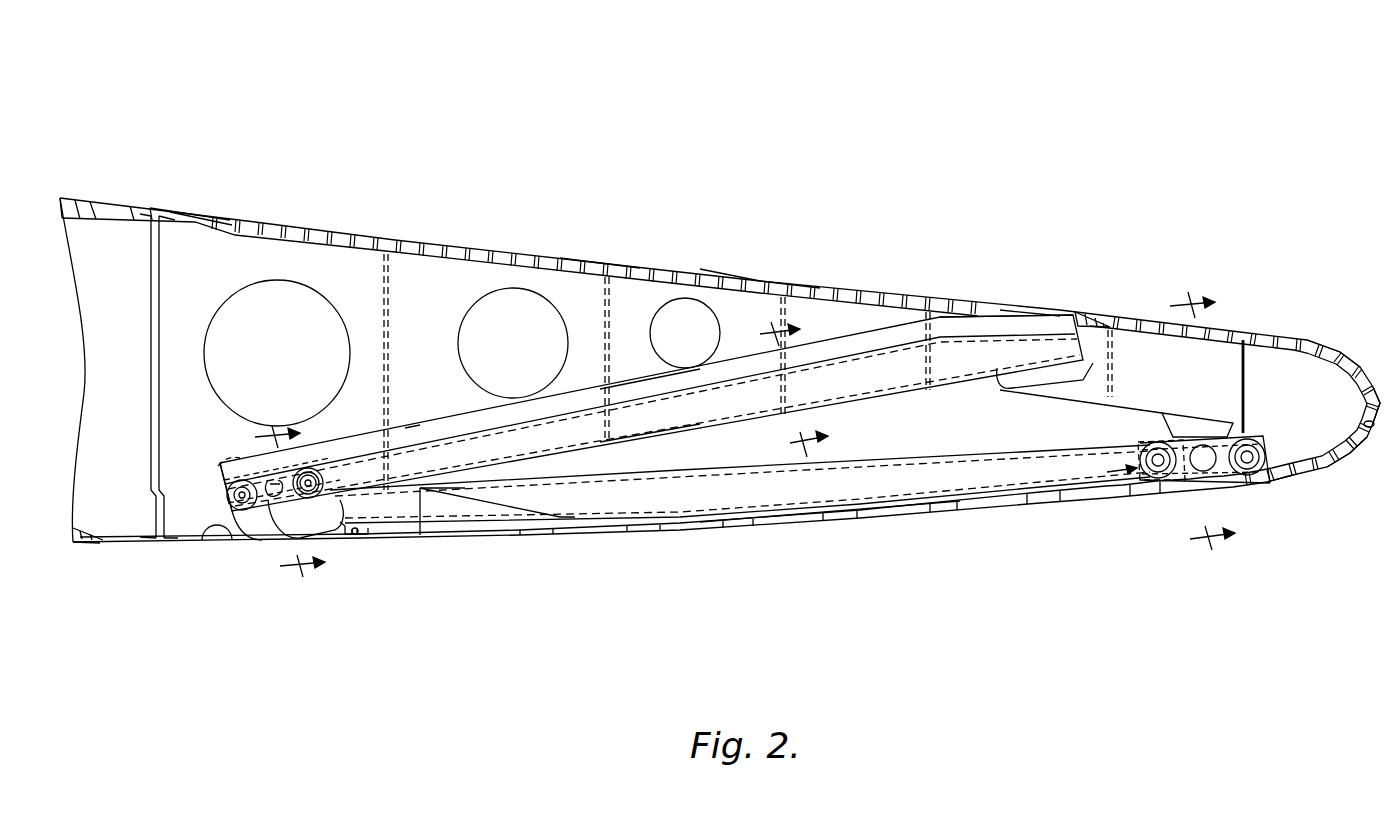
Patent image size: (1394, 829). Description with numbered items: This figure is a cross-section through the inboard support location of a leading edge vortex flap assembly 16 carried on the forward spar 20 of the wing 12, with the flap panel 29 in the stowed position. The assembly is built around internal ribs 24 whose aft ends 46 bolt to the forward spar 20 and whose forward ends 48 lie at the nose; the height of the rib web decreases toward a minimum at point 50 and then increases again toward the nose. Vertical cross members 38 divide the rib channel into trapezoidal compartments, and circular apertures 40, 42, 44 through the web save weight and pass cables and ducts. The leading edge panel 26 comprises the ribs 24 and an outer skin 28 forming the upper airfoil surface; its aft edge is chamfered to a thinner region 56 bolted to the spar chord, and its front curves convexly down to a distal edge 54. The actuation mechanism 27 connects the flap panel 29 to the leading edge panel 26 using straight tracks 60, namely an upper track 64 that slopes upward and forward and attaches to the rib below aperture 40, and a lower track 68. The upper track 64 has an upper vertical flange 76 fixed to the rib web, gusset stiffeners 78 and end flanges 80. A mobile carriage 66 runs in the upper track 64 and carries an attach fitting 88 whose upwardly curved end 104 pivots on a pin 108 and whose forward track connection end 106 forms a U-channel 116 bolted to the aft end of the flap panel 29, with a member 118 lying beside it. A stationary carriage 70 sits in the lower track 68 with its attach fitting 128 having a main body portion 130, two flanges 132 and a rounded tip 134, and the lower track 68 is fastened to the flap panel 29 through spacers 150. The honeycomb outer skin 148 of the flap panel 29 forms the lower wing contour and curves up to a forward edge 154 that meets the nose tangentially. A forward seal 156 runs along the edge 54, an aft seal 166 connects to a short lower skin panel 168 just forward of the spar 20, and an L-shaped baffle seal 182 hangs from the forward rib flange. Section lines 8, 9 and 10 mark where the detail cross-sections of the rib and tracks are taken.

The vortex flap assembly 16 is at (834, 86).
The wing 12 is at (90, 548).
The forward spar 20 is at (152, 410).
The ribs 24 is at (418, 278).
The leading edge panel 26 is at (722, 272).
The outer skin 28 is at (582, 268).
The flap panel 29 is at (790, 536).
The chamfered region 56 is at (192, 214).
The aft ends of the ribs 46 is at (162, 305).
The vertical cross members 38 is at (1115, 386).
The circular aperture 40 is at (290, 371).
The circular aperture 42 is at (527, 361).
The circular aperture 44 is at (698, 350).
The upper track 64 is at (665, 430).
The lower track 68 is at (718, 503).
The straight tracks 60 is at (708, 462).
The upper vertical flange 76 is at (1012, 314).
The actuation mechanism 27 is at (1046, 298).
The main body portion 130 is at (1150, 436).
The point of minimum web height 50 is at (1034, 422).
The mobile carriage 66 is at (228, 496).
The upwardly curved end 104 is at (222, 466).
The pivot pin 108 is at (310, 470).
The attach fitting 88 is at (268, 536).
The end flange 80 is at (215, 540).
The U-channel 116 is at (366, 540).
The track connection end 106 is at (421, 540).
The gusset 118 is at (516, 537).
The short lower skin panel 168 is at (350, 542).
The aft seal 166 is at (354, 545).
The attach fitting 128 is at (1150, 432).
The flanges 132 is at (1168, 414).
The forward end of the ribs 48 is at (1243, 340).
The rounded tip 134 is at (1176, 492).
The stationary carriage 70 is at (1107, 472).
The outer skin of the flap panel 148 is at (1283, 494).
The curved forward edge 154 is at (1352, 478).
The forward seal 156 is at (1335, 352).
The curved forward distal edge 54 is at (1366, 410).
The baffle seal 182 is at (1362, 423).
The spacers 150 is at (926, 514).
The gusset stiffeners 78 is at (413, 426).
The section line 9 is at (279, 518).
The section line 10 is at (786, 387).
The section line 8 is at (1201, 417).